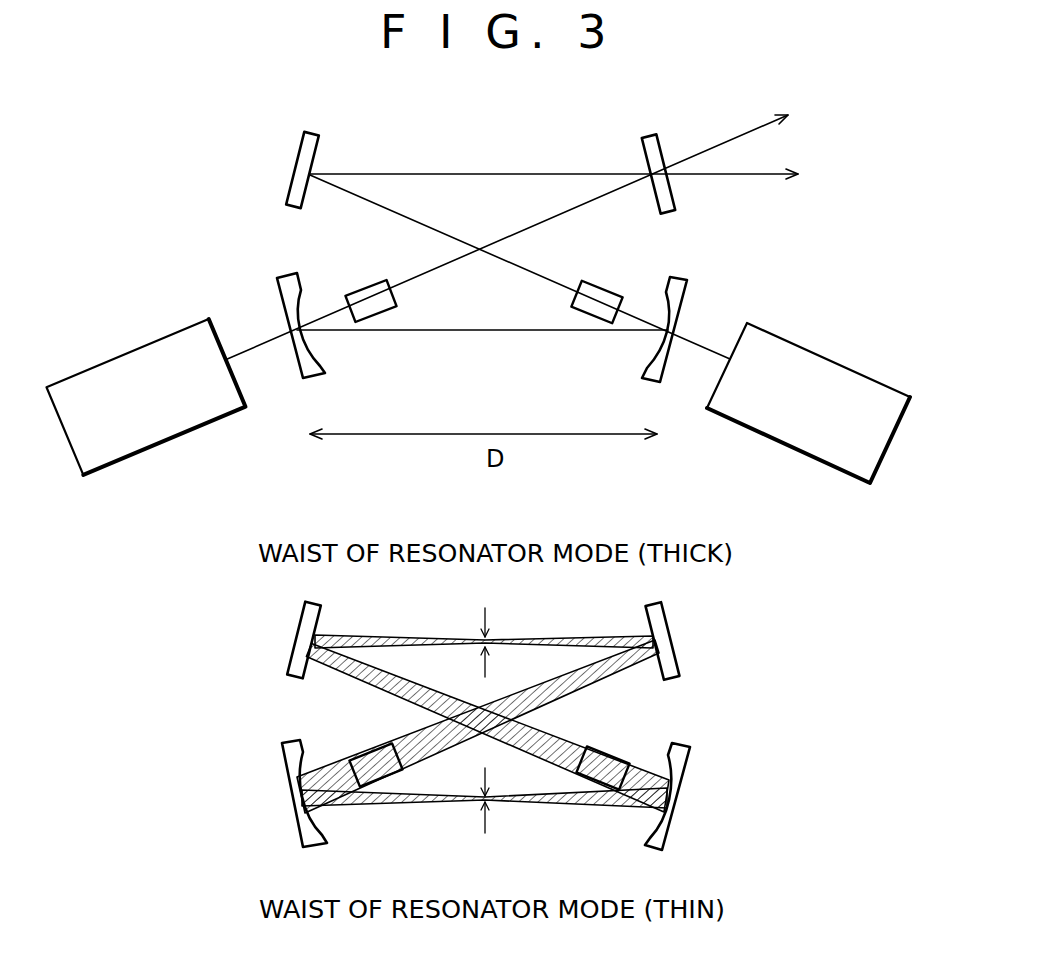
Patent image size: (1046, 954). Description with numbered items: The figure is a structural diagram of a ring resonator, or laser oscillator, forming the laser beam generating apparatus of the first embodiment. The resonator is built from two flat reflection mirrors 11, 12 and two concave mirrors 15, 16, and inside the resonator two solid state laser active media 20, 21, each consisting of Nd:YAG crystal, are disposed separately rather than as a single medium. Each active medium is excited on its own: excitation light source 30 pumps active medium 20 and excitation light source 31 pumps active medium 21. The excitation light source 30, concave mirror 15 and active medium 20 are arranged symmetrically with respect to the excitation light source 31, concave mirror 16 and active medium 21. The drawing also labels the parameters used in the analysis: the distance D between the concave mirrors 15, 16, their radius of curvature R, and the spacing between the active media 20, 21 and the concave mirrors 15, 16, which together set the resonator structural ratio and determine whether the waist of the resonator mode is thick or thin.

The flat reflection mirror 11 is at (299, 150).
The flat reflection mirror 12 is at (656, 141).
The concave mirror 15 is at (306, 378).
The concave mirror 16 is at (652, 379).
The solid state laser active medium 20 is at (373, 283).
The solid state laser active medium 21 is at (601, 287).
The excitation light source 30 is at (116, 357).
The excitation light source 31 is at (817, 354).